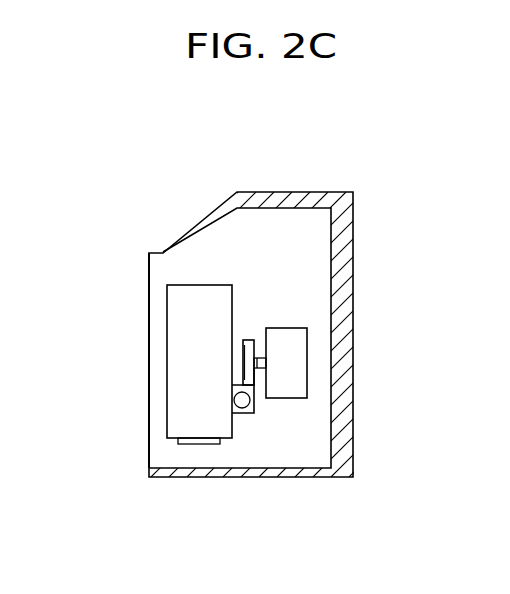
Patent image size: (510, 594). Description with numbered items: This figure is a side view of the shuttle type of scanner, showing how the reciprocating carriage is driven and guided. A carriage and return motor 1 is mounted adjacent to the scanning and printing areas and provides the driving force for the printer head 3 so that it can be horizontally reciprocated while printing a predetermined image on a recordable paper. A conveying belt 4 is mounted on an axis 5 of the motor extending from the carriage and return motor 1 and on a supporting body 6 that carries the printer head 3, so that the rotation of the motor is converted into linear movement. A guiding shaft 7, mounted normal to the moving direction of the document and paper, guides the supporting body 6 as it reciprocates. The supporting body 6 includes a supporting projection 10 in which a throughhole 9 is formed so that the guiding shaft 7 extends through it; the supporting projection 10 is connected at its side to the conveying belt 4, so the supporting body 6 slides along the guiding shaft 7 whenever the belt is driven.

The carriage and return motor 1 is at (307, 362).
The printer head 3 is at (180, 327).
The conveying belt 4 is at (248, 340).
The axis of motor 5 is at (258, 368).
The supporting body 6 is at (185, 287).
The guiding shaft 7 is at (232, 386).
The throughhole 9 is at (236, 396).
The supporting projection 10 is at (255, 370).